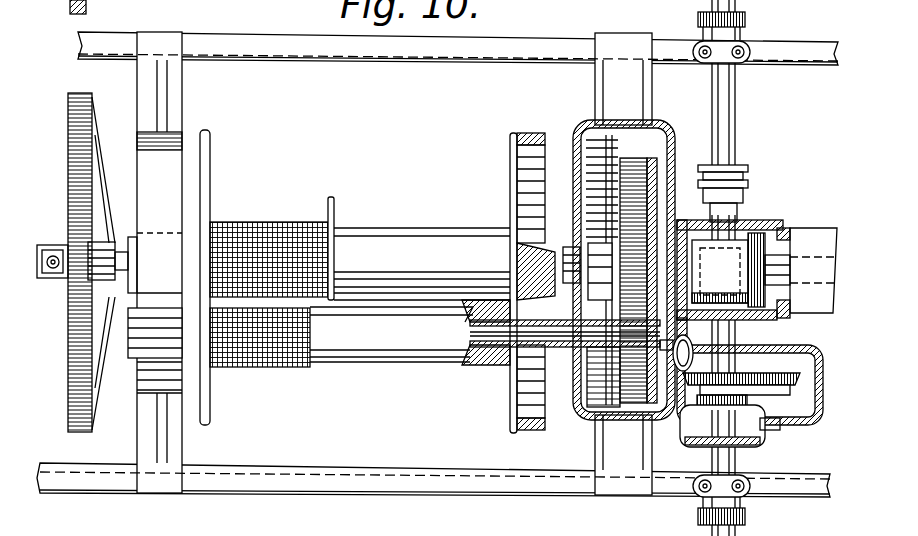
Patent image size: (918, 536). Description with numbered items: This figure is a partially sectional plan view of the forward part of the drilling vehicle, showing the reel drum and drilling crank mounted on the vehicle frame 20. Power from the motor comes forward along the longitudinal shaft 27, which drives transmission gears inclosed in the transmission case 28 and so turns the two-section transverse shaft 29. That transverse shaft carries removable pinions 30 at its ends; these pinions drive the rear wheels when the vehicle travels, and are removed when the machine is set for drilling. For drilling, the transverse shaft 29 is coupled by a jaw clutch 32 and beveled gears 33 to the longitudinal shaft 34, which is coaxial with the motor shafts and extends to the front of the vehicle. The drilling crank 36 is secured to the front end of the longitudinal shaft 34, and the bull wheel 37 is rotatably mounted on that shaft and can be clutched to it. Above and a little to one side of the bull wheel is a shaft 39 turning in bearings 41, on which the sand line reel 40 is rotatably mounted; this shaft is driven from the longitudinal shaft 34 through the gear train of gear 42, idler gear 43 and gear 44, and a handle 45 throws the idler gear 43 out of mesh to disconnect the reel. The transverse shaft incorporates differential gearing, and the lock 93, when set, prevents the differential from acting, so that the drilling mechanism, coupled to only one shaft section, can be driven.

The vehicle frame 20 is at (336, 466).
The longitudinal shaft 27 is at (790, 258).
The transmission case 28 is at (788, 233).
The two-section transverse shaft 29 is at (736, 128).
The removable pinions 30 is at (746, 21).
The jaw clutch 32 is at (743, 407).
The beveled gears 33 is at (645, 158).
The longitudinal shaft 34 is at (118, 250).
The drilling crank 36 is at (72, 187).
The bull wheel 37 is at (427, 233).
The shaft 39 is at (497, 333).
The sand line reel 40 is at (413, 366).
The bearings 41 is at (128, 350).
The gear 42 is at (632, 368).
The idler gear 43 is at (598, 280).
The gear 44 is at (632, 186).
The handle 45 is at (675, 343).
The differential lock 93 is at (744, 190).